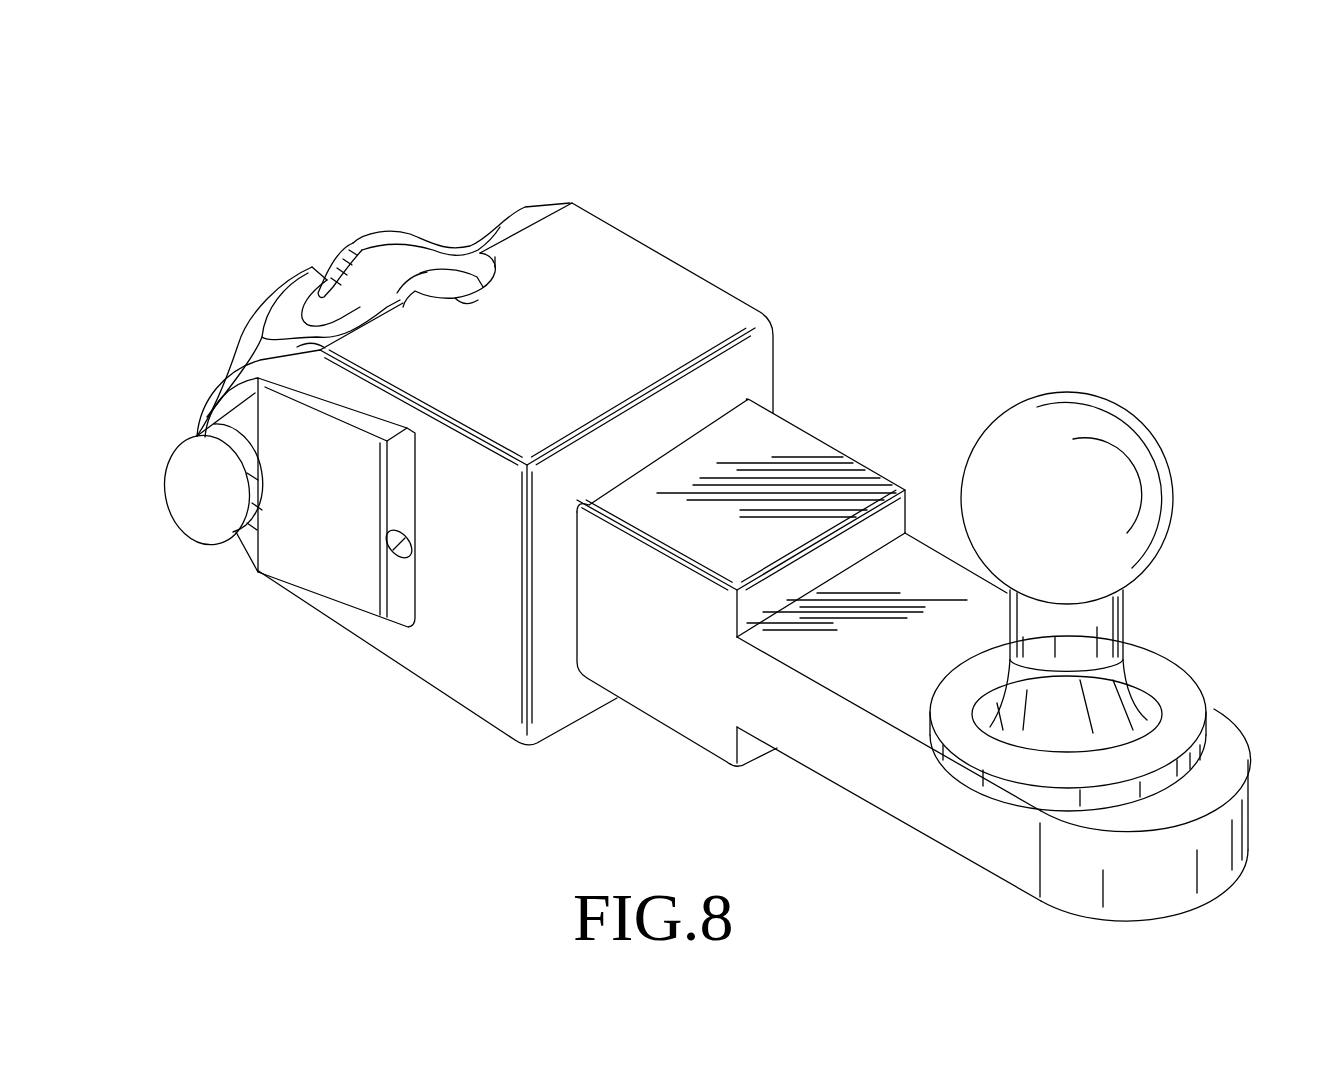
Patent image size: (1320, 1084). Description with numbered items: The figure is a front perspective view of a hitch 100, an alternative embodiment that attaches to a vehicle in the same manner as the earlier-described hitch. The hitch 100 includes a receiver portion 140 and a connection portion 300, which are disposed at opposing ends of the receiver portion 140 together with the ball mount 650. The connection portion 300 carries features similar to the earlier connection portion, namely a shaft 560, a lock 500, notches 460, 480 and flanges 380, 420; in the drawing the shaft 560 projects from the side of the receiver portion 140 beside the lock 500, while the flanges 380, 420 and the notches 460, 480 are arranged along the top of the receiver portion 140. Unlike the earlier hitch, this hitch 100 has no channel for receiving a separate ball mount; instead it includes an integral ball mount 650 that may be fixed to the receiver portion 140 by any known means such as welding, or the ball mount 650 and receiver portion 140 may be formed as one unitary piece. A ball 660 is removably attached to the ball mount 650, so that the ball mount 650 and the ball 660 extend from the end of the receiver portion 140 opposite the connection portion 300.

The hitch 100 is at (1055, 238).
The receiver portion 140 is at (790, 315).
The connection portion 300 is at (382, 197).
The flange 380 is at (447, 270).
The flange 420 is at (300, 313).
The notch 460 is at (468, 293).
The notch 480 is at (333, 273).
The lock 500 is at (347, 536).
The shaft 560 is at (193, 425).
The ball mount 650 is at (856, 760).
The ball 660 is at (1143, 477).